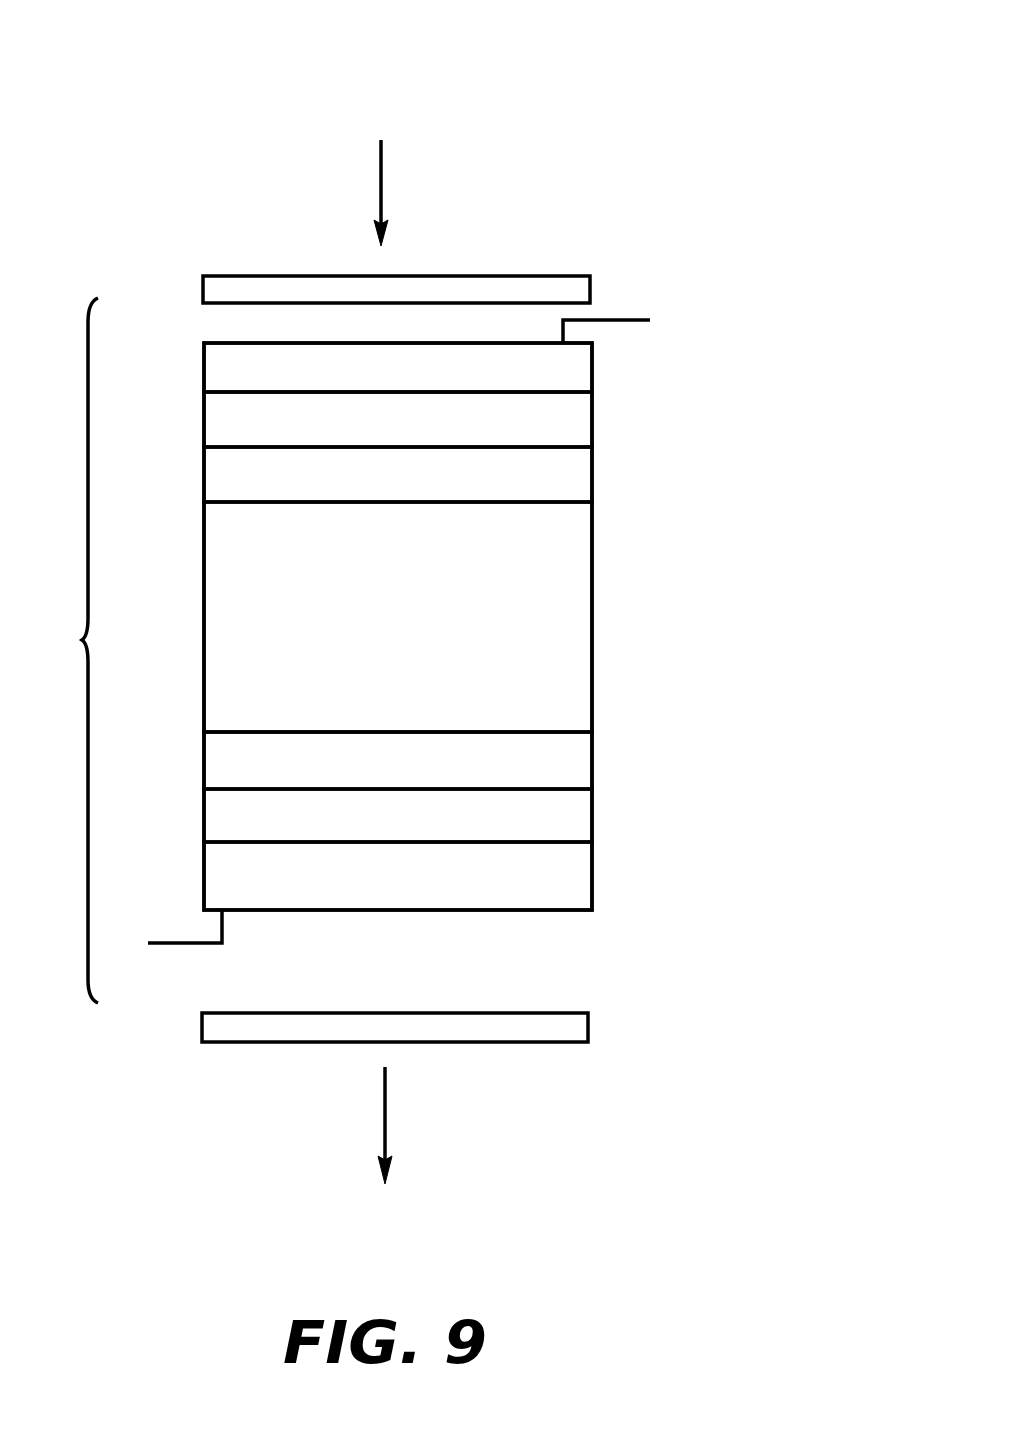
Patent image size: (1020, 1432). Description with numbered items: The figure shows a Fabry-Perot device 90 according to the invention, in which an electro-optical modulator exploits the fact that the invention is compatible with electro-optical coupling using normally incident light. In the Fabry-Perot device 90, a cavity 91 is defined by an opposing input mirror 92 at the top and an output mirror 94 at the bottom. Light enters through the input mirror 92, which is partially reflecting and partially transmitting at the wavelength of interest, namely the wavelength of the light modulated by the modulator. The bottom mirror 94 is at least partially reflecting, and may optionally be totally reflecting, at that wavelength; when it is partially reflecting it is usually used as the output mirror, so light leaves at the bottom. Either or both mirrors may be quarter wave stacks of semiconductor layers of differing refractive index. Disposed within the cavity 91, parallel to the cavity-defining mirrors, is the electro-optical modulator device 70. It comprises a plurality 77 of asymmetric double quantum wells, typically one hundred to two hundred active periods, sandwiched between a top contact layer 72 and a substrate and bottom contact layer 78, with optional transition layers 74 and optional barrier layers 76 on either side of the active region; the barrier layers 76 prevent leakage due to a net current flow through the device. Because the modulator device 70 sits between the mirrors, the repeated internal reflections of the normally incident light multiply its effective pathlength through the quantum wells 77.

The Fabry-Perot device 90 is at (697, 90).
The input mirror 92 is at (590, 281).
The output mirror 94 is at (588, 1030).
The device 70 is at (670, 627).
The cavity 91 is at (76, 650).
The top contact layer 72 is at (405, 385).
The transition layers 74 is at (401, 432).
The barrier layers 76 is at (396, 490).
The plurality of asymmetric double quantum wells 77 is at (418, 635).
The substrate and bottom contact layer 78 is at (406, 888).